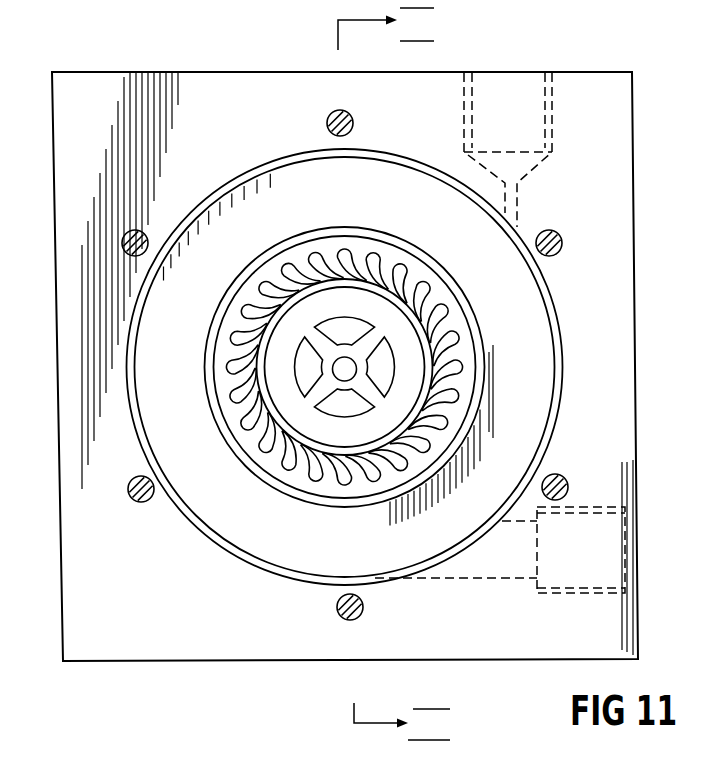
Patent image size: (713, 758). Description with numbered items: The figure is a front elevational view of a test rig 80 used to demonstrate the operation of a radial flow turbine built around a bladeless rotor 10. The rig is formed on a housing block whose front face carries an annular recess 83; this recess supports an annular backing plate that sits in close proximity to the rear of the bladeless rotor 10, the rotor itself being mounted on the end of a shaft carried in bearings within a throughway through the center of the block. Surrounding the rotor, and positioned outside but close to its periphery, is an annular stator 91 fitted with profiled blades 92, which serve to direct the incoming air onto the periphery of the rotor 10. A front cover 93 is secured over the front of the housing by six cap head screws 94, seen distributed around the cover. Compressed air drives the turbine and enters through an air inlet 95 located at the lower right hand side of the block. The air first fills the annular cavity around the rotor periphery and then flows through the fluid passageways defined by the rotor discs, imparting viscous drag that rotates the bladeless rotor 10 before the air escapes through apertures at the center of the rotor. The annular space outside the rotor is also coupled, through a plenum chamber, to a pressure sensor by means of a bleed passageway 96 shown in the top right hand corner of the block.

The bladeless rotor 10 is at (407, 360).
The test rig 80 is at (608, 60).
The annular recess 83 is at (265, 182).
The annular stator 91 is at (457, 376).
The profiled blades 92 is at (345, 367).
The front cover 93 is at (268, 618).
The cap head screws 94 is at (332, 112).
The air inlet 95 is at (575, 560).
The bleed passageway 96 is at (557, 142).